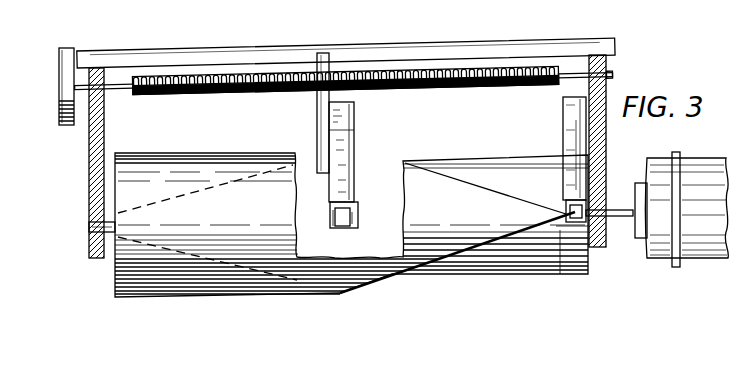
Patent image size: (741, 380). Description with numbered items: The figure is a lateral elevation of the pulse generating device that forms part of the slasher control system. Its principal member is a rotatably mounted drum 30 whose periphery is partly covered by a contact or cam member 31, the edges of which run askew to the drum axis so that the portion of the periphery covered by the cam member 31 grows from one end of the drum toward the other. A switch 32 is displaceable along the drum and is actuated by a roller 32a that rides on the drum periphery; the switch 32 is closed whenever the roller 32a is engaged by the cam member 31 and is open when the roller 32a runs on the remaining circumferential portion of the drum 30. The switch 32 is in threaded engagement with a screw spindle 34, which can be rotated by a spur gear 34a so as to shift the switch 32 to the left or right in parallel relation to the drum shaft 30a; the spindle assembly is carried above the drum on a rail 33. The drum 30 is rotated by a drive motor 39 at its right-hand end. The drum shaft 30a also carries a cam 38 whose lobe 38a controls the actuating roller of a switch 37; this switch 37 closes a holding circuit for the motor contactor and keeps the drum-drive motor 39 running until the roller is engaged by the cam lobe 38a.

The drum 30 is at (496, 258).
The drum shaft 30a is at (89, 227).
The cam member 31 is at (410, 253).
The switch 32 is at (348, 137).
The roller 32a is at (355, 213).
The guide rail 33 is at (274, 47).
The screw spindle 34 is at (222, 98).
The spur gear 34a is at (60, 100).
The switch 37 is at (567, 121).
The cam 38 is at (581, 256).
The cam lobe 38a is at (575, 224).
The drive motor 39 is at (698, 256).